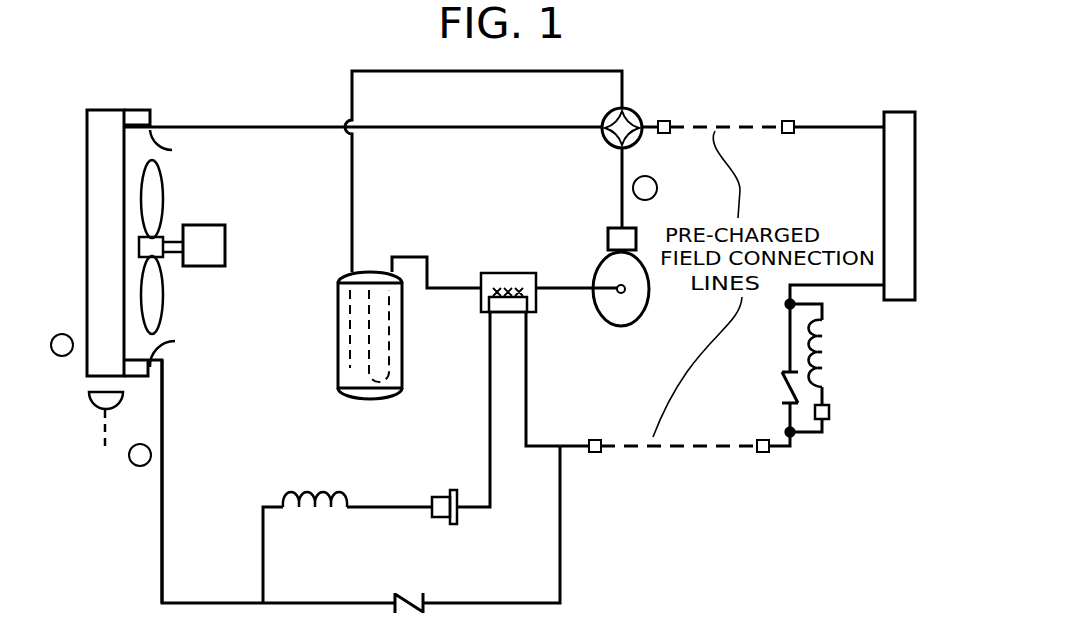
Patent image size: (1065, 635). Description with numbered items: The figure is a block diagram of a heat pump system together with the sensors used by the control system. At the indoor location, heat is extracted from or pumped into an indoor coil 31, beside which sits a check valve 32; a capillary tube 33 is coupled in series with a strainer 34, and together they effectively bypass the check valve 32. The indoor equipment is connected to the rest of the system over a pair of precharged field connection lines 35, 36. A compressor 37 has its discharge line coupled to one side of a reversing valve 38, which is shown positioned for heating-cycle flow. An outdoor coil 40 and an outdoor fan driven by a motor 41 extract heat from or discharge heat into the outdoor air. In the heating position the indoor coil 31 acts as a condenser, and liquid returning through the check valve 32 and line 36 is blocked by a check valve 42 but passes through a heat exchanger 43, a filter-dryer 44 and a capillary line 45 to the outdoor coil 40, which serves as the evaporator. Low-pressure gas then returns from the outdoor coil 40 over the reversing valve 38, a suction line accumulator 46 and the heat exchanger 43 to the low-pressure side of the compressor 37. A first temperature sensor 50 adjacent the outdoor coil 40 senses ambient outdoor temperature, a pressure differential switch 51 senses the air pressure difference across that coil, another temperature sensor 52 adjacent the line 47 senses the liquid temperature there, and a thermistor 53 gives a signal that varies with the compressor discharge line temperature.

The indoor coil 31 is at (927, 90).
The check valve 32 is at (786, 392).
The capillary tube 33 is at (893, 366).
The strainer 34 is at (829, 410).
The precharged field connection line 35 is at (692, 127).
The precharged field connection line 36 is at (668, 448).
The compressor 37 is at (614, 302).
The reversing valve 38 is at (628, 108).
The outdoor coil 40 is at (100, 162).
The fan motor 41 is at (205, 240).
The check valve 42 is at (408, 598).
The heat exchanger 43 is at (505, 288).
The filter-dryer 44 is at (441, 520).
The capillary line 45 is at (335, 482).
The suction line accumulator 46 is at (368, 396).
The line 47 is at (163, 405).
The temperature sensor 50 is at (62, 333).
The pressure differential switch 51 is at (97, 422).
The temperature sensor 52 is at (125, 465).
The temperature sensor 53 is at (660, 194).